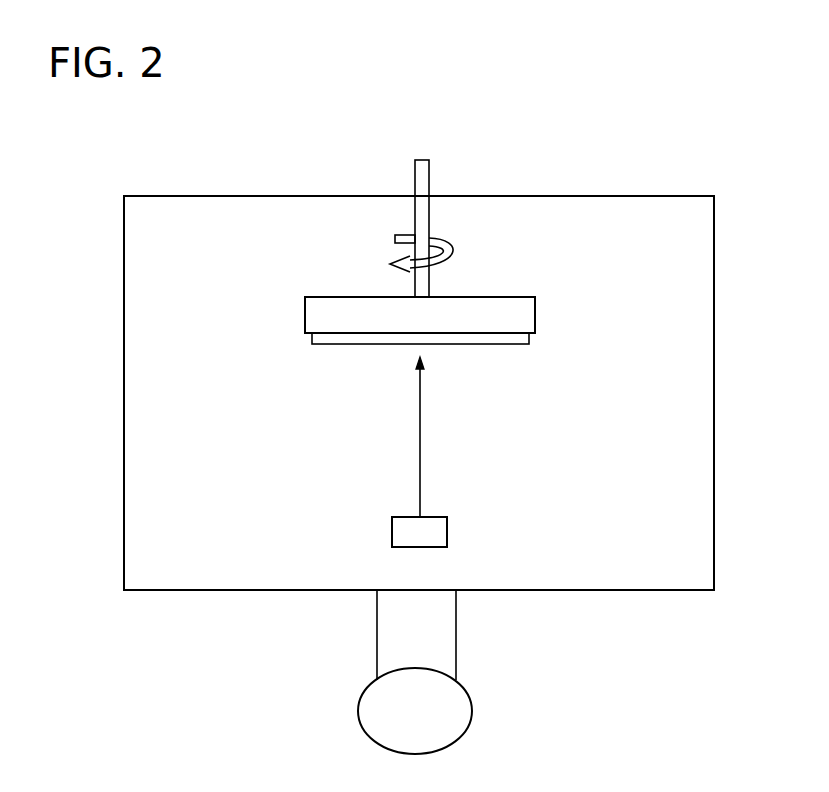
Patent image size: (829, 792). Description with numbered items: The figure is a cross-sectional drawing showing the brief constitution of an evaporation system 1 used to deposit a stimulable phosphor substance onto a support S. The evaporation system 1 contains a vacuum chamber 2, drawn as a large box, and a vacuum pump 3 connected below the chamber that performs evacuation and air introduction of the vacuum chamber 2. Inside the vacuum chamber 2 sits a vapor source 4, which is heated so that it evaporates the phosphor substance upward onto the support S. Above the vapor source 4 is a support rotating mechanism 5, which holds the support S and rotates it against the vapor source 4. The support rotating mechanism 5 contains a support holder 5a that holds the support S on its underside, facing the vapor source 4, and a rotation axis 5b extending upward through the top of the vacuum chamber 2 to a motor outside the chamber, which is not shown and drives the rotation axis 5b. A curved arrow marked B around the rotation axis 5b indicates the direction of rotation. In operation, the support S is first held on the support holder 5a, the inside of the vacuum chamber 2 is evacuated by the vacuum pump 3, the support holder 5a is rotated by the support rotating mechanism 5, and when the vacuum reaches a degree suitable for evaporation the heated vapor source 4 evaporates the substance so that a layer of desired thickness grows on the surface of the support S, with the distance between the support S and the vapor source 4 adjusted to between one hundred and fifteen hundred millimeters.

The evaporation system 1 is at (571, 183).
The vacuum chamber 2 is at (714, 257).
The vacuum pump 3 is at (472, 713).
The vapor source 4 is at (447, 532).
The support rotating mechanism 5 is at (424, 246).
The support holder 5a is at (522, 297).
The rotation axis 5b is at (420, 218).
The support S is at (528, 337).
The rotation direction B is at (408, 256).